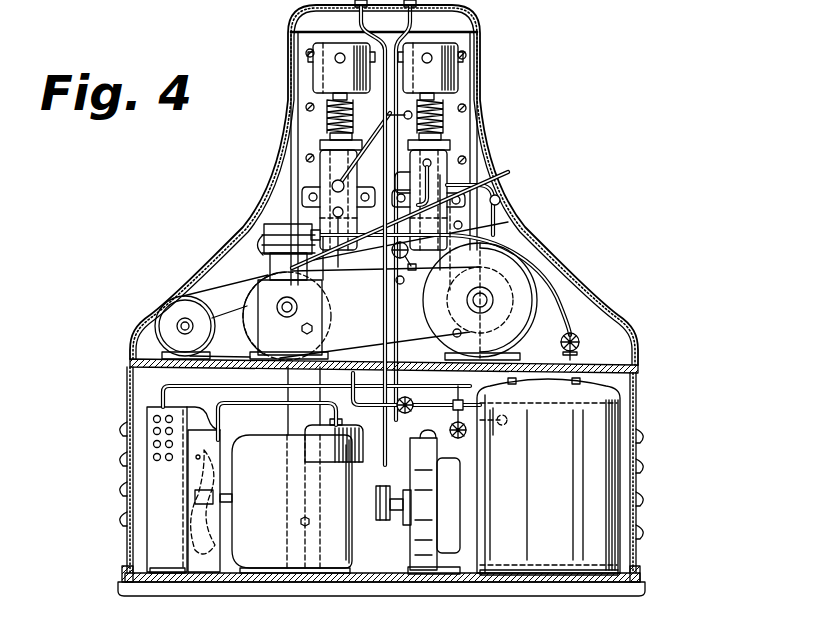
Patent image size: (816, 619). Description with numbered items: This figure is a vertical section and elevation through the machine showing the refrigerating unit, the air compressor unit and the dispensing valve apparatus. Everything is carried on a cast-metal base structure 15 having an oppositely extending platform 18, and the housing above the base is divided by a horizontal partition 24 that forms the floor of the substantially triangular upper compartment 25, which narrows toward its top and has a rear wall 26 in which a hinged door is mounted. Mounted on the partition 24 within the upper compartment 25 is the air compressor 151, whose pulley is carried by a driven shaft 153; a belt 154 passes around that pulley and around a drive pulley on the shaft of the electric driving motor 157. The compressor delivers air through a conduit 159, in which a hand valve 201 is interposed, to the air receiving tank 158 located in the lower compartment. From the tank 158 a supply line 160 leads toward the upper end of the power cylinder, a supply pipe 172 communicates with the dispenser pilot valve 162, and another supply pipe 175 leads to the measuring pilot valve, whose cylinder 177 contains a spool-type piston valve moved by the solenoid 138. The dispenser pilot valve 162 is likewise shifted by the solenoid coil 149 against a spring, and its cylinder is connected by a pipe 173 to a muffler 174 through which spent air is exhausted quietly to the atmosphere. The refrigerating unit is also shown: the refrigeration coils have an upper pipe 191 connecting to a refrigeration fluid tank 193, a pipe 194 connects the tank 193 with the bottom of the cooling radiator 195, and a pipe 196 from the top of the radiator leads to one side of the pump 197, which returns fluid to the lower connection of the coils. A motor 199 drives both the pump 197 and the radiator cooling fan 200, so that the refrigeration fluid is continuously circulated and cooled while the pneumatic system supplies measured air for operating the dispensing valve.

The base structure 15 is at (396, 479).
The platform 18 is at (381, 596).
The horizontal partition 24 is at (399, 357).
The upper compartment 25 is at (396, 186).
The rear wall 26 is at (384, 210).
The solenoid 138 is at (460, 96).
The solenoid coil 149 is at (309, 96).
The air compressor 151 is at (325, 292).
The driven shaft 153 is at (276, 316).
The belt 154 is at (339, 227).
The electric driving motor 157 is at (502, 267).
The air receiving tank 158 is at (548, 476).
The conduit 159 is at (481, 282).
The supply line 160 is at (416, 405).
The dispenser pilot valve 162 is at (318, 151).
The supply pipe 172 is at (503, 434).
The pipe 173 is at (204, 306).
The muffler 174 is at (162, 326).
The supply pipe 175 is at (387, 270).
The cylinder 177 is at (459, 175).
The upper pipe 191 is at (389, 236).
The refrigeration fluid tank 193 is at (335, 425).
The pipe 194 is at (277, 421).
The cooling radiator 195 is at (133, 490).
The pipe 196 is at (316, 387).
The pump 197 is at (457, 502).
The motor 199 is at (292, 470).
The radiator cooling fan 200 is at (236, 489).
The hand valve 201 is at (617, 333).